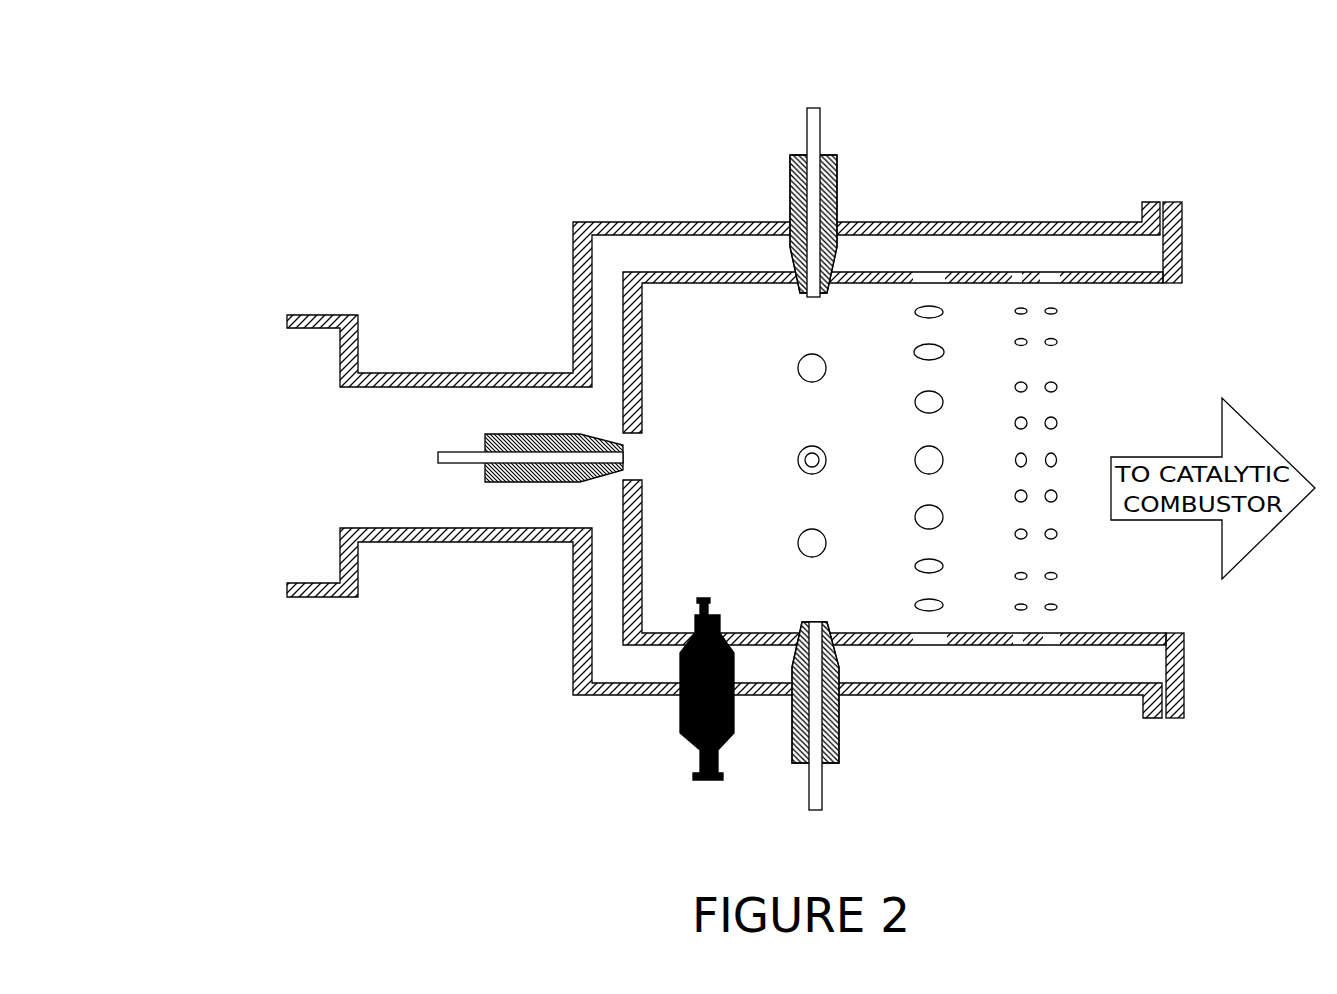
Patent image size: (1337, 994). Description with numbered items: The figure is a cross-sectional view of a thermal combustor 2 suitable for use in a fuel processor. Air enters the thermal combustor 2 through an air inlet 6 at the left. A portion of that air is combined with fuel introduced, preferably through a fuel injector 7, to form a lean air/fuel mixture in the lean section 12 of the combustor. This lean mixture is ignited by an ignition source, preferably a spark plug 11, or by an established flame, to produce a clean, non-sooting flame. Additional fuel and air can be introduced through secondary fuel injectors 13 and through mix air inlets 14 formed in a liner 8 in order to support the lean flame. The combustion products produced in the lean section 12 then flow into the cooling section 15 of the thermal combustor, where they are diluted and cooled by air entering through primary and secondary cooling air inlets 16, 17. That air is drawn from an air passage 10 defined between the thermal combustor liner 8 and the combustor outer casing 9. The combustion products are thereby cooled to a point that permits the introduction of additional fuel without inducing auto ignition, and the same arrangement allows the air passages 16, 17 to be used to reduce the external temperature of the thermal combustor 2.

The thermal combustor 2 is at (478, 210).
The air inlet 6 is at (332, 438).
The fuel injector 7 is at (435, 457).
The liner 8 is at (698, 270).
The combustor outer casing 9 is at (915, 220).
The air passage 10 is at (1072, 257).
The spark plug 11 is at (708, 783).
The lean section 12 is at (848, 578).
The secondary fuel injectors 13 is at (838, 185).
The mix air inlets 14 is at (795, 543).
The cooling section 15 is at (973, 492).
The primary cooling air inlets 16 is at (947, 353).
The secondary cooling air inlets 17 is at (1062, 423).